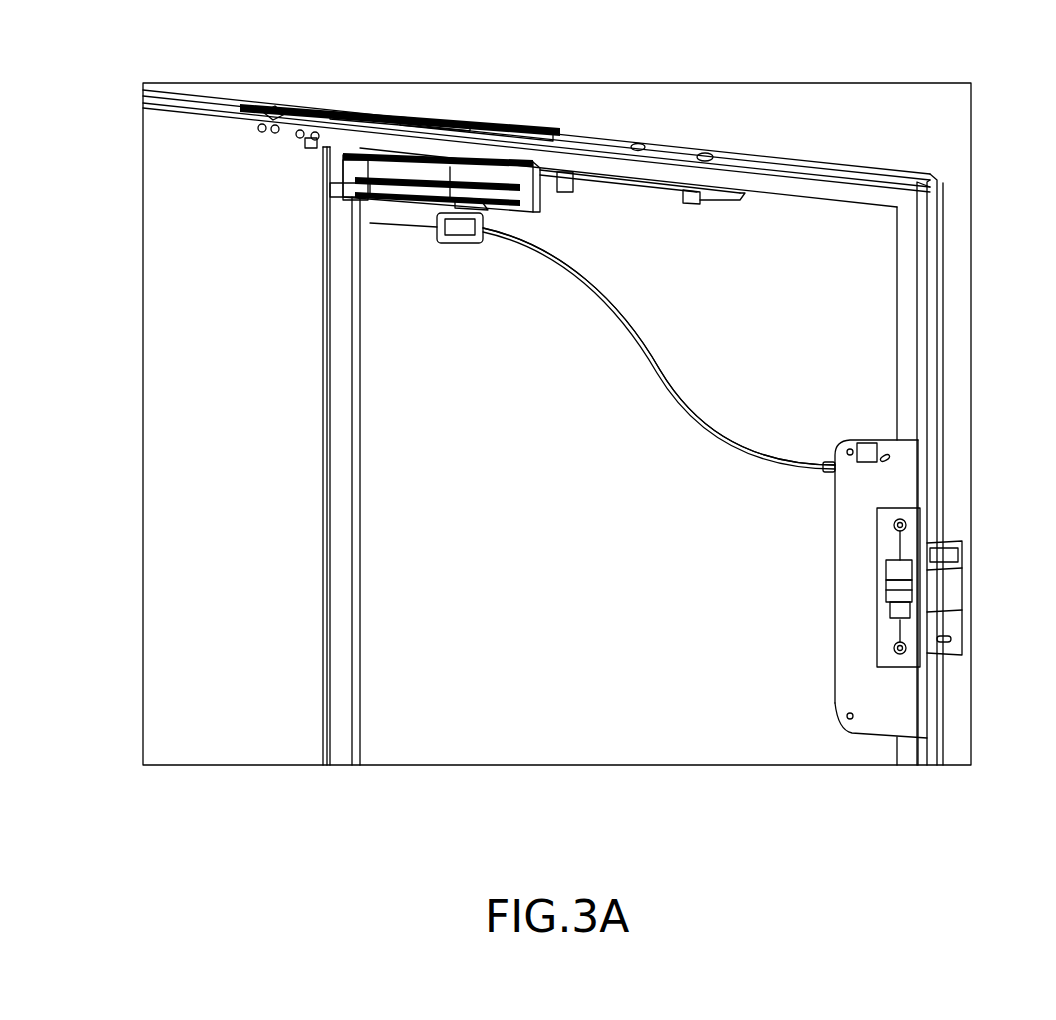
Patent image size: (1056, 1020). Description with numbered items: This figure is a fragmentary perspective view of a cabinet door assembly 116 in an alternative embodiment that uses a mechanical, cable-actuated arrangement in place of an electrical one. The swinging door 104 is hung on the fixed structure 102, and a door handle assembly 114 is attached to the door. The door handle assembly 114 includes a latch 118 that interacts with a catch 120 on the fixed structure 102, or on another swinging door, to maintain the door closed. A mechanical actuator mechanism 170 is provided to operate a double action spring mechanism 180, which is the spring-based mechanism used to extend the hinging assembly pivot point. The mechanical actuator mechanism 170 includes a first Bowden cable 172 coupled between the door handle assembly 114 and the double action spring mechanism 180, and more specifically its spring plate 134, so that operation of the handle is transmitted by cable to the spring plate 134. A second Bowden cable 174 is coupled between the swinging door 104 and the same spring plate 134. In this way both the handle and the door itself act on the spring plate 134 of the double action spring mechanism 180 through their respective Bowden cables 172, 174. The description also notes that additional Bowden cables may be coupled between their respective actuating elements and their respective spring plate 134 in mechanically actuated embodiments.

The fixed structure 102 is at (155, 259).
The swinging door 104 is at (805, 183).
The door handle assembly 114 is at (939, 432).
The cabinet door assembly 116 is at (660, 57).
The latch 118 is at (935, 562).
The catch 120 is at (915, 603).
The spring plate 134 is at (365, 225).
The mechanical actuator mechanism 170 is at (642, 370).
The first Bowden cable 172 is at (587, 273).
The second Bowden cable 174 is at (672, 203).
The double action spring mechanism 180 is at (545, 215).